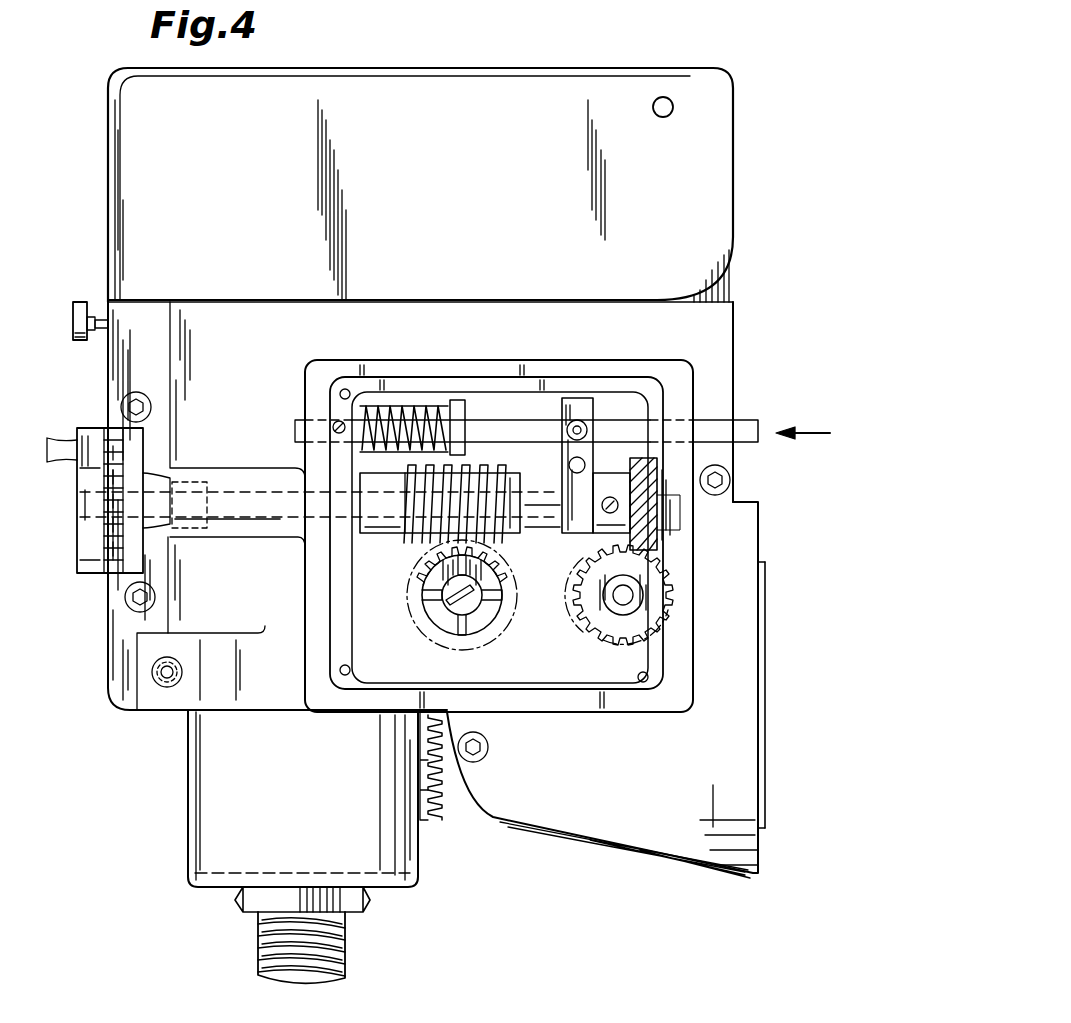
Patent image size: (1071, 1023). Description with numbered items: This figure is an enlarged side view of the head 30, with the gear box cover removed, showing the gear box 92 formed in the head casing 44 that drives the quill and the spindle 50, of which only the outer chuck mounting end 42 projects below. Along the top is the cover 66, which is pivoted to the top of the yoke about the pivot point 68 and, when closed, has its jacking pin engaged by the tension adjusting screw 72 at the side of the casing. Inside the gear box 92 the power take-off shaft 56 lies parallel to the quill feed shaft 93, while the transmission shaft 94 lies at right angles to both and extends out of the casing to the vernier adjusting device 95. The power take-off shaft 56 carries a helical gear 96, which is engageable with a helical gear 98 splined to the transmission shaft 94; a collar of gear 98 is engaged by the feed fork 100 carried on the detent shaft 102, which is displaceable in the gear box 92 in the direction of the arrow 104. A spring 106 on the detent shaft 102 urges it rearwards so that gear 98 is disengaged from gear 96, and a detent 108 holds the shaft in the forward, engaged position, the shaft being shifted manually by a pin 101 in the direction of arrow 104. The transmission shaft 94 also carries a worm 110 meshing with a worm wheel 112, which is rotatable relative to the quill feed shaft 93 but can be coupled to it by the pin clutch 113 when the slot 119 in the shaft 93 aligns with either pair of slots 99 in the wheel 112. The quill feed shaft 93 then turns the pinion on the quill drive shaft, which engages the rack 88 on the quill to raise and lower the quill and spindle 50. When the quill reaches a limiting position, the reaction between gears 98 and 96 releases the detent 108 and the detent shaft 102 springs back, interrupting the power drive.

The head 30 is at (112, 703).
The outer chuck mounting end 42 is at (258, 957).
The head casing 44 is at (652, 840).
The spindle 50 is at (236, 910).
The power take-off shaft 56 is at (628, 600).
The cover 66 is at (415, 200).
The pivot point 68 is at (663, 96).
The tension adjusting screw 72 is at (88, 302).
The rack 88 is at (443, 770).
The gear box 92 is at (562, 618).
The quill feed shaft 93 is at (460, 605).
The transmission shaft 94 is at (270, 520).
The vernier adjusting device 95 is at (90, 428).
The helical gear 96 is at (589, 608).
The helical gear 98 is at (655, 540).
The slots 99 is at (420, 577).
The feed fork 100 is at (580, 400).
The pin 101 is at (597, 420).
The detent shaft 102 is at (542, 420).
The arrow 104 is at (800, 433).
The spring 106 is at (425, 410).
The detent 108 is at (332, 404).
The worm 110 is at (492, 470).
The worm wheel 112 is at (492, 632).
The pin clutch 113 is at (432, 607).
The slot 119 is at (475, 585).